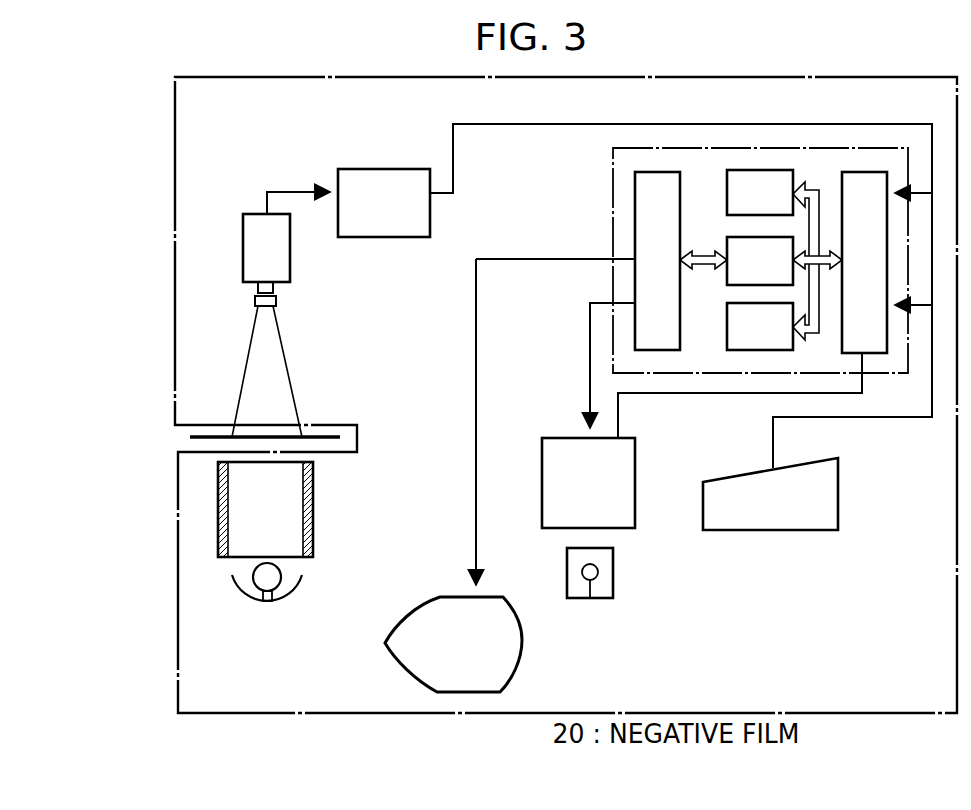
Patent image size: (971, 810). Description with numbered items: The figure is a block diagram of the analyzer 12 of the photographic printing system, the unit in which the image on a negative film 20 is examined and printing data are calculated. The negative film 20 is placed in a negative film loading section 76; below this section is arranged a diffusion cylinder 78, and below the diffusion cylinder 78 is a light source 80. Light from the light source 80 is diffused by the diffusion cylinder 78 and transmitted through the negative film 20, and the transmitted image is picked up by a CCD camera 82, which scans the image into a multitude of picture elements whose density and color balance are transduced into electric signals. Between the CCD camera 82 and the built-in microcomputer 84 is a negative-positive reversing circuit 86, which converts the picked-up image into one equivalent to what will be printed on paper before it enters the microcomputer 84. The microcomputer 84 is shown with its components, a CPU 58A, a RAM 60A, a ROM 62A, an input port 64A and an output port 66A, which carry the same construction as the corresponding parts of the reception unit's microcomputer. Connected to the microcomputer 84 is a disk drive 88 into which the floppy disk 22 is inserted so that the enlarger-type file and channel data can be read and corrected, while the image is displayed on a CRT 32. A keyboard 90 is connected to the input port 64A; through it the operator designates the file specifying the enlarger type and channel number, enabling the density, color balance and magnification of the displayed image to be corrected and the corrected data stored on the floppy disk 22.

The analyzer 12 is at (168, 146).
The negative film 20 is at (330, 437).
The floppy disk 22 is at (613, 585).
The CRT 32 is at (392, 660).
The CPU 58A is at (735, 237).
The RAM 60A is at (780, 170).
The ROM 62A is at (727, 325).
The input port 64A is at (875, 172).
The output port 66A is at (660, 172).
The negative film loading section 76 is at (185, 446).
The diffusion cylinder 78 is at (313, 490).
The light source 80 is at (282, 578).
The CCD camera 82 is at (290, 275).
The microcomputer 84 is at (770, 148).
The negative-positive reversing circuit 86 is at (410, 237).
The disk drive 88 is at (635, 528).
The keyboard 90 is at (791, 530).